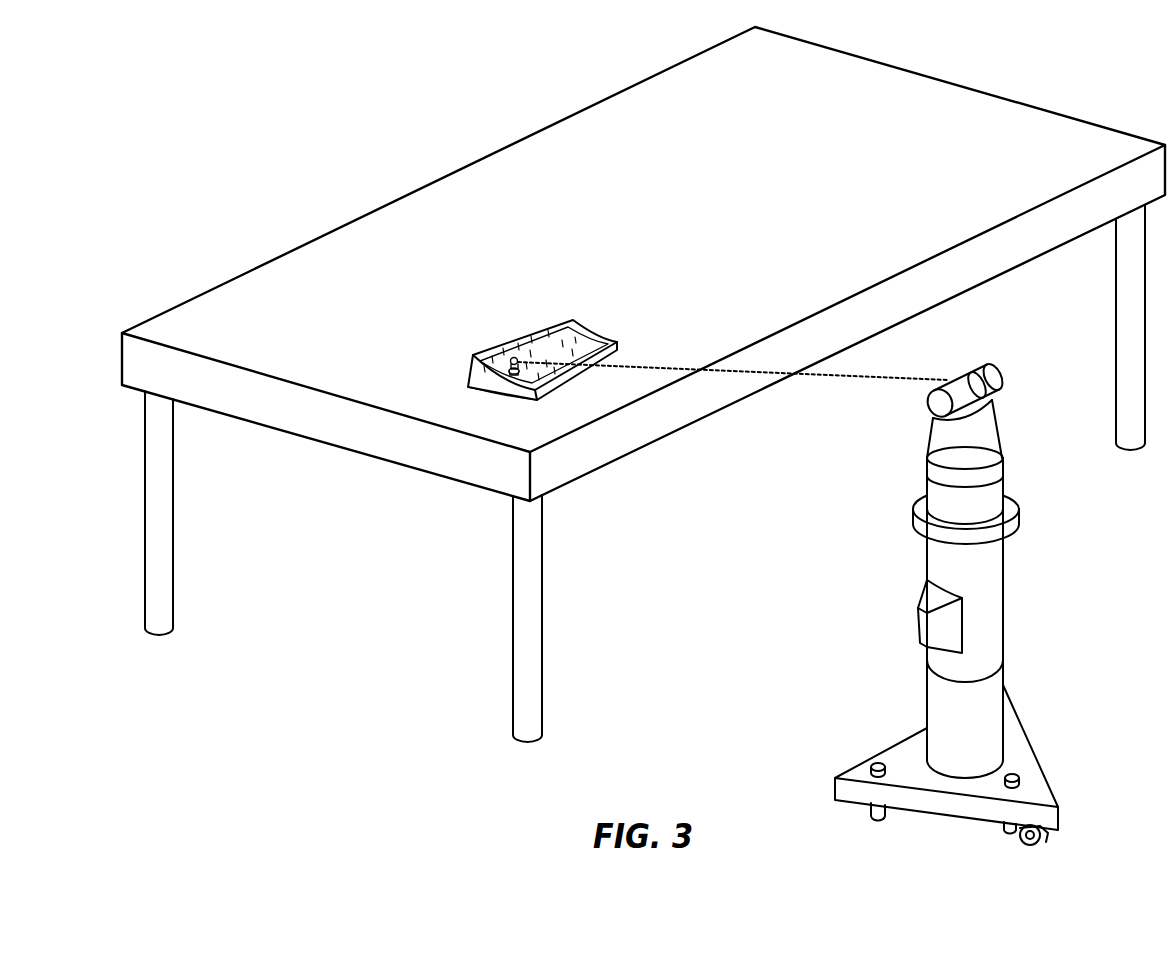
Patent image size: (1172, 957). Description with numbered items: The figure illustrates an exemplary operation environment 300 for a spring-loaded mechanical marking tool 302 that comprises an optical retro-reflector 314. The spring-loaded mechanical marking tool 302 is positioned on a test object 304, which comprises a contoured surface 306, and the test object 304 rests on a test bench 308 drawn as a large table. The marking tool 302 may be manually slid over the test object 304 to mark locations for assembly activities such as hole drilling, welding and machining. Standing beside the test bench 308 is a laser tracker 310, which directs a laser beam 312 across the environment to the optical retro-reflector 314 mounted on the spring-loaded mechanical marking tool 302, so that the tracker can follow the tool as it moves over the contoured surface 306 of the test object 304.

The operation environment 300 is at (247, 64).
The spring-loaded mechanical marking tool 302 is at (513, 374).
The test object 304 is at (598, 325).
The contoured surface 306 is at (558, 343).
The test bench 308 is at (985, 108).
The laser tracker 310 is at (1022, 599).
The laser beam 312 is at (847, 378).
The optical retro-reflector 314 is at (513, 355).